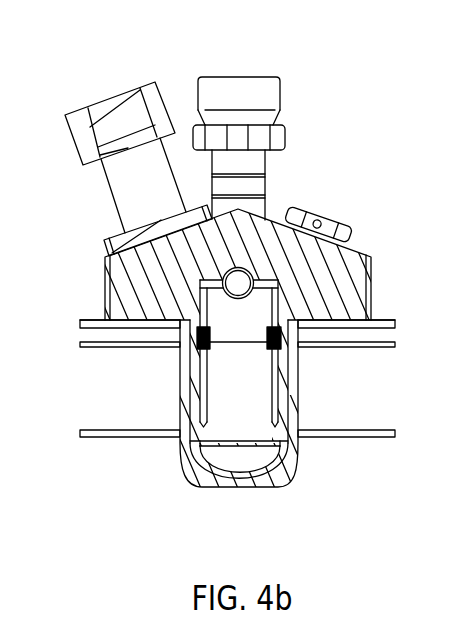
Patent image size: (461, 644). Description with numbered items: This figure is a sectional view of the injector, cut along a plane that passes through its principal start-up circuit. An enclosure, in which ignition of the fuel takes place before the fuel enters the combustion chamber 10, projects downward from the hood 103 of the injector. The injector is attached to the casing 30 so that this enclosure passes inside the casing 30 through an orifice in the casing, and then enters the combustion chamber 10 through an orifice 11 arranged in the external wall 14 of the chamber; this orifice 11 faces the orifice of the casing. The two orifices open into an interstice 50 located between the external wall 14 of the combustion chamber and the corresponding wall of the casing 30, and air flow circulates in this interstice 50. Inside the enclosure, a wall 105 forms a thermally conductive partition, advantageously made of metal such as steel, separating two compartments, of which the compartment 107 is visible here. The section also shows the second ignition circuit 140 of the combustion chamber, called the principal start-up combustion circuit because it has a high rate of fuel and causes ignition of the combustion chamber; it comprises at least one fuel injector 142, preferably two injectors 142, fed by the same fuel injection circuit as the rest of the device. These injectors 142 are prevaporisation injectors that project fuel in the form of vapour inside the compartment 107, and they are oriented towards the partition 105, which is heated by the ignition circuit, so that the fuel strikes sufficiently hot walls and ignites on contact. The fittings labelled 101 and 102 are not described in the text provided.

The combustion chamber 10 is at (337, 468).
The orifice 11 is at (222, 440).
The external wall 14 is at (383, 437).
The casing 30 is at (386, 318).
The interstice 50 is at (83, 420).
The angled connector 101 is at (112, 108).
The vertical connector 102 is at (268, 93).
The hood 103 is at (356, 257).
The wall 105 is at (242, 421).
The compartment 107 is at (291, 441).
The second ignition circuit 140 is at (297, 388).
The fuel injector 142 is at (272, 392).